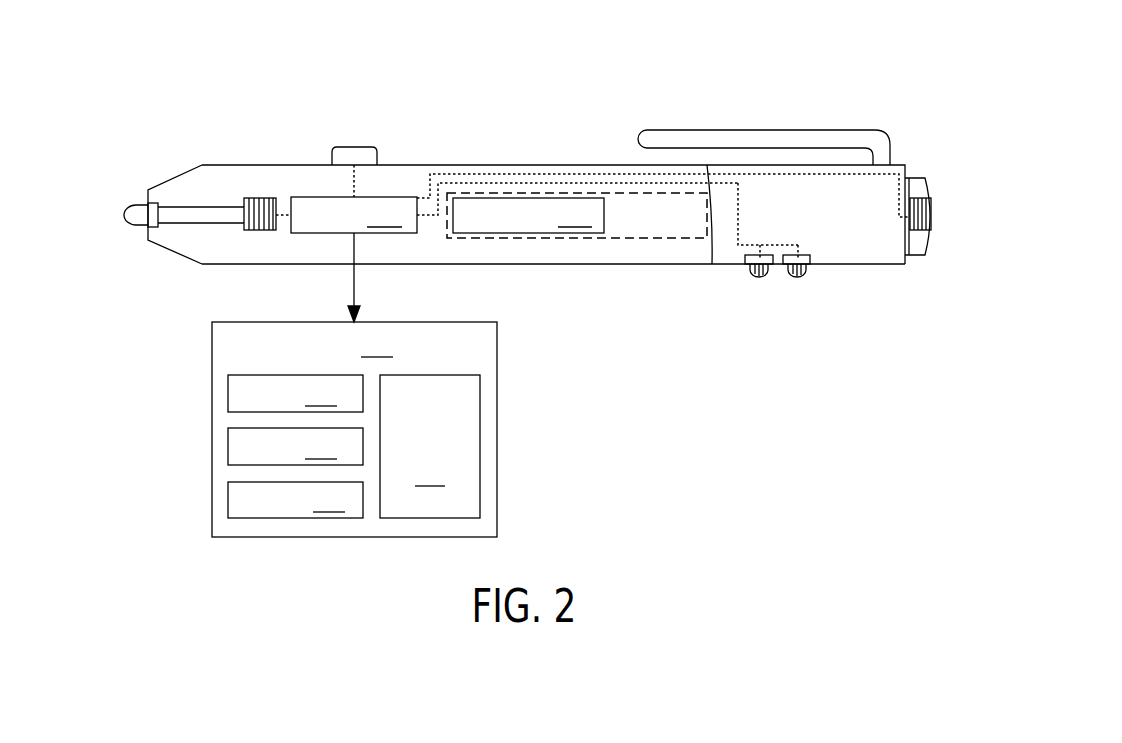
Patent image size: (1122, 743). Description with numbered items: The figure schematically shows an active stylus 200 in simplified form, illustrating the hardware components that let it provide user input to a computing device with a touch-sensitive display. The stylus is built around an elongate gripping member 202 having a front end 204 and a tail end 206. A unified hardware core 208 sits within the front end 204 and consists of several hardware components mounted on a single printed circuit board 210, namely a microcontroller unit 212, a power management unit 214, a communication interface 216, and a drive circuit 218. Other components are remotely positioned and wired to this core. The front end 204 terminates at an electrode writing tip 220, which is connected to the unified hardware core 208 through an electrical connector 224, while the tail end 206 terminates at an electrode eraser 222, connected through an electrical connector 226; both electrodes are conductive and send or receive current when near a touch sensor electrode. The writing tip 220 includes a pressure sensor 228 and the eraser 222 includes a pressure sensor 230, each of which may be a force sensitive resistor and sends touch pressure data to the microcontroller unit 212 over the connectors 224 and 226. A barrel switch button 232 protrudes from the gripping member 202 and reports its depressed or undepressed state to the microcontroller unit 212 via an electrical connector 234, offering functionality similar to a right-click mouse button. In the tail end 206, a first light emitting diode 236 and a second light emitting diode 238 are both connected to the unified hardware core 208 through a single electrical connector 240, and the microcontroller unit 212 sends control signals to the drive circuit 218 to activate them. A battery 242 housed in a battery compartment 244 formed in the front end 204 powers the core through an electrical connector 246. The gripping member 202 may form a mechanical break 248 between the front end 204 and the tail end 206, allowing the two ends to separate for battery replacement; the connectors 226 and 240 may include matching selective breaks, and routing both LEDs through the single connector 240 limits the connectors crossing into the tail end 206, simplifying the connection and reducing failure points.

The active stylus 200 is at (183, 64).
The elongate gripping member 202 is at (707, 386).
The front end 204 is at (657, 264).
The tail end 206 is at (887, 264).
The unified hardware core 208 is at (354, 259).
The printed circuit board 210 is at (354, 429).
The microcontroller unit 212 is at (295, 393).
The power management unit 214 is at (295, 446).
The communication interface 216 is at (295, 500).
The drive circuit 218 is at (430, 446).
The electrode writing tip 220 is at (133, 203).
The electrode eraser 222 is at (933, 238).
The electrical connector 224 is at (285, 224).
The electrical connector 226 is at (823, 177).
The pressure sensor 228 is at (262, 198).
The pressure sensor 230 is at (918, 200).
The barrel switch button 232 is at (355, 147).
The electrical connector 234 is at (358, 180).
The first light emitting diode 236 is at (760, 278).
The second light emitting diode 238 is at (798, 278).
The single electrical connector 240 is at (738, 205).
The battery 242 is at (528, 215).
The battery compartment 244 is at (520, 238).
The electrical connector 246 is at (432, 216).
The mechanical break 248 is at (720, 217).